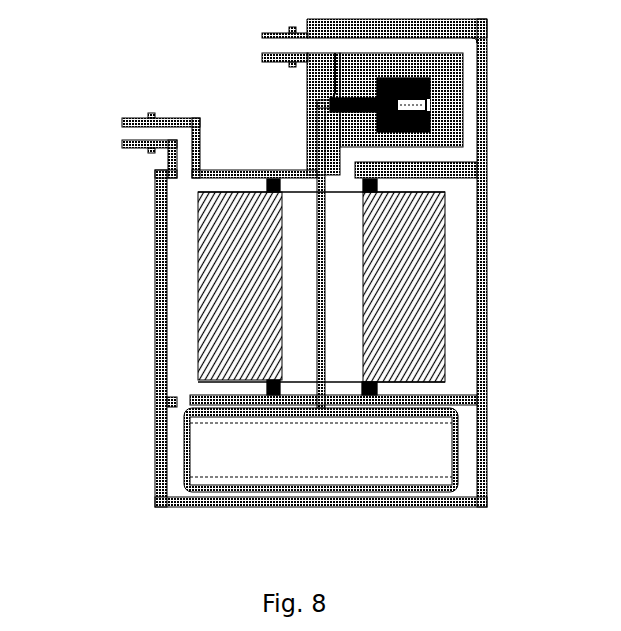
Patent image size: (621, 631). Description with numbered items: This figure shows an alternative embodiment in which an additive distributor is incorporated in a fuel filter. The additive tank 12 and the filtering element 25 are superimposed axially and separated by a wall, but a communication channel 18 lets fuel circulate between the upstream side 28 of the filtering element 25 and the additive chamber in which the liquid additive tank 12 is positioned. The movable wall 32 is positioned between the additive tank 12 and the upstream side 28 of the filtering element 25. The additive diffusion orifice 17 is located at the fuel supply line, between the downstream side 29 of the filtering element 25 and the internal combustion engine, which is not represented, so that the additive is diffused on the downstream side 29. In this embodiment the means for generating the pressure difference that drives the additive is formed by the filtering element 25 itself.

The additive tank 12 is at (183, 442).
The additive diffusion orifice 17 is at (335, 52).
The communication channel 18 is at (188, 400).
The filtering element 25 is at (427, 315).
The upstream side 28 is at (177, 238).
The downstream side 29 is at (352, 237).
The movable wall 32 is at (460, 444).